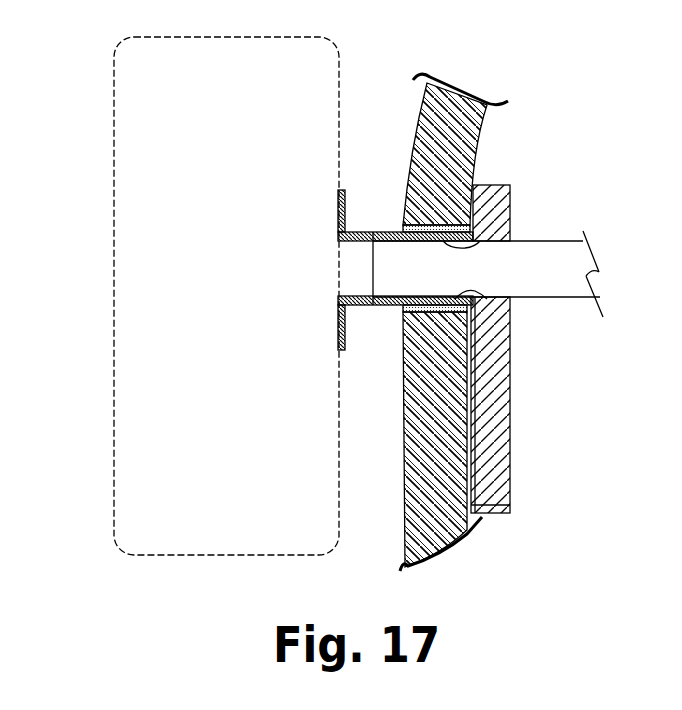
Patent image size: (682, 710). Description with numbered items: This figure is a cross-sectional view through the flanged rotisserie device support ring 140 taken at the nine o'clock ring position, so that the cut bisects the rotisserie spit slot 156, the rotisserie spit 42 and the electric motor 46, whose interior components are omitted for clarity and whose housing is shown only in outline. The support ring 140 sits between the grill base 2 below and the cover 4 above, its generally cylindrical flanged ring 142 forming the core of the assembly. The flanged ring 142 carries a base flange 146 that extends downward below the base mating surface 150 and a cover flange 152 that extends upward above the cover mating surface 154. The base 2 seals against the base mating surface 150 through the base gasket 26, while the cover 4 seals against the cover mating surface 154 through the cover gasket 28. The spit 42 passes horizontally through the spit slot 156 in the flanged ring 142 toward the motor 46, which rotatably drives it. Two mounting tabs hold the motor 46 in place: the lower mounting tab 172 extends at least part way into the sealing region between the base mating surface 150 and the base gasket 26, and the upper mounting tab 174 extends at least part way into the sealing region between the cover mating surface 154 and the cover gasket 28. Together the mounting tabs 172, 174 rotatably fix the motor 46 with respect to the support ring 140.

The base 2 is at (407, 516).
The cover 4 is at (418, 108).
The base gasket 26 is at (433, 318).
The cover gasket 28 is at (440, 220).
The rotisserie spit 42 is at (598, 276).
The electric motor 46 is at (130, 362).
The flanged rotisserie device support ring 140 is at (547, 340).
The flanged ring 142 is at (510, 373).
The base flange 146 is at (497, 515).
The base mating surface 150 is at (512, 305).
The cover flange 152 is at (494, 179).
The cover mating surface 154 is at (505, 228).
The rotisserie spit slot 156 is at (507, 301).
The mounting tab 172 is at (373, 305).
The mounting tab 174 is at (373, 230).